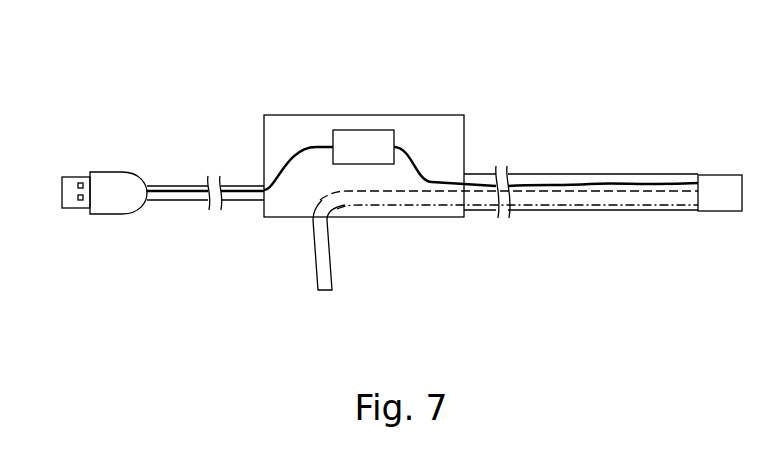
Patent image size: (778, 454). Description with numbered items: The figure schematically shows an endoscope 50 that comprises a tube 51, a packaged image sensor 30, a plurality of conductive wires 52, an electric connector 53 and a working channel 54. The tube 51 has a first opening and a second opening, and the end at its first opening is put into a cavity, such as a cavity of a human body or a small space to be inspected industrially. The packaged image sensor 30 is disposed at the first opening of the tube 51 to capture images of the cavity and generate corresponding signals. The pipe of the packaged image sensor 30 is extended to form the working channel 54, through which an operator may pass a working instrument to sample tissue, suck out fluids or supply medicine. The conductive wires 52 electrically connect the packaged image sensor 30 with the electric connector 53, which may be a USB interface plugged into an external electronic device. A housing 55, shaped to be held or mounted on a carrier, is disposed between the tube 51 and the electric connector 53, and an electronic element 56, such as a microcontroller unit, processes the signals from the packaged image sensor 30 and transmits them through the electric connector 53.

The endoscope 50 is at (60, 111).
The tube 51 is at (595, 173).
The conductive wires 52 is at (178, 185).
The electric connector 53 is at (118, 180).
The working channel 54 is at (538, 195).
The housing 55 is at (293, 114).
The electronic element 56 is at (370, 138).
The packaged image sensor 30 is at (722, 183).